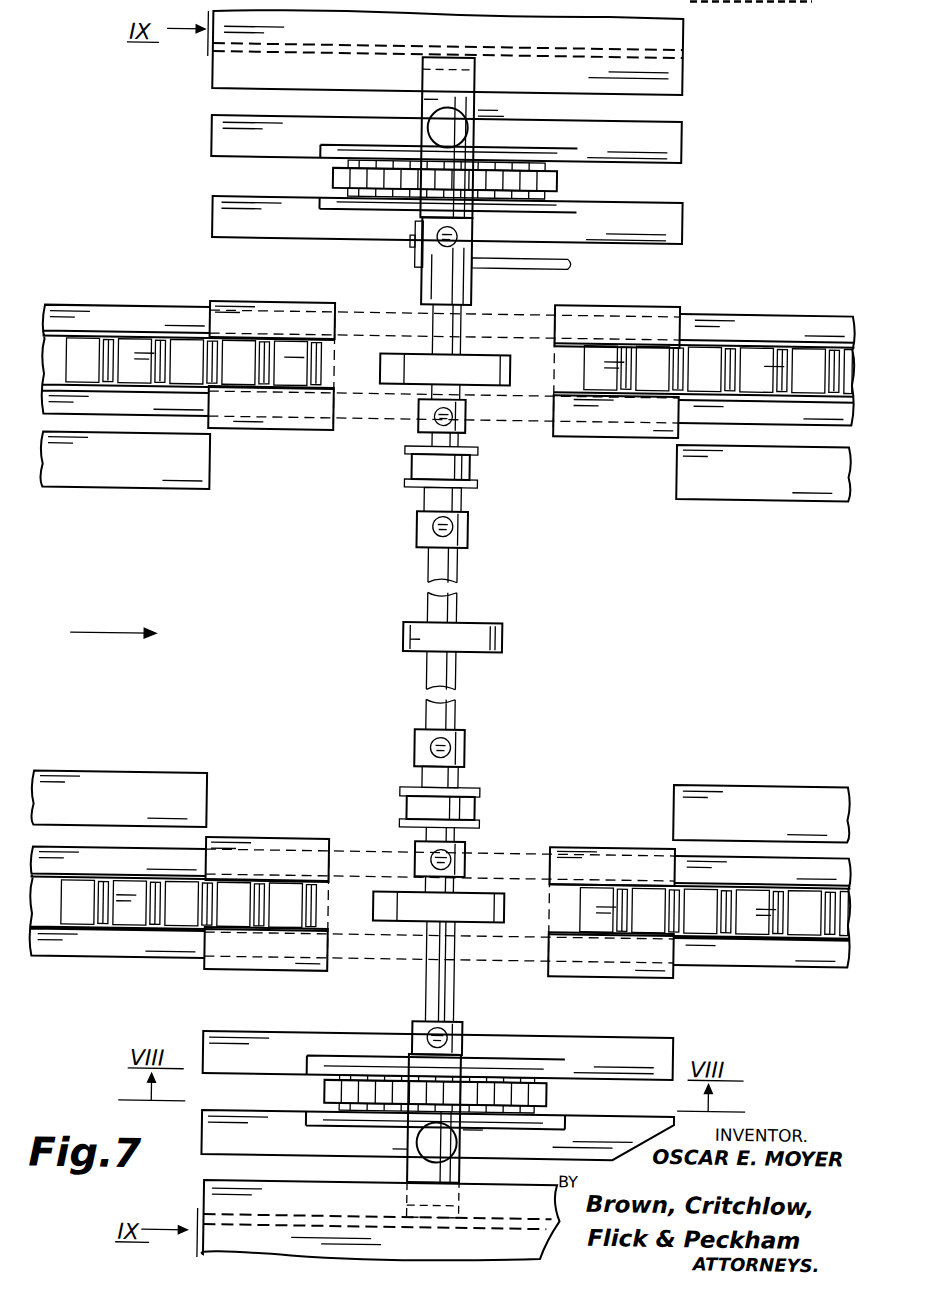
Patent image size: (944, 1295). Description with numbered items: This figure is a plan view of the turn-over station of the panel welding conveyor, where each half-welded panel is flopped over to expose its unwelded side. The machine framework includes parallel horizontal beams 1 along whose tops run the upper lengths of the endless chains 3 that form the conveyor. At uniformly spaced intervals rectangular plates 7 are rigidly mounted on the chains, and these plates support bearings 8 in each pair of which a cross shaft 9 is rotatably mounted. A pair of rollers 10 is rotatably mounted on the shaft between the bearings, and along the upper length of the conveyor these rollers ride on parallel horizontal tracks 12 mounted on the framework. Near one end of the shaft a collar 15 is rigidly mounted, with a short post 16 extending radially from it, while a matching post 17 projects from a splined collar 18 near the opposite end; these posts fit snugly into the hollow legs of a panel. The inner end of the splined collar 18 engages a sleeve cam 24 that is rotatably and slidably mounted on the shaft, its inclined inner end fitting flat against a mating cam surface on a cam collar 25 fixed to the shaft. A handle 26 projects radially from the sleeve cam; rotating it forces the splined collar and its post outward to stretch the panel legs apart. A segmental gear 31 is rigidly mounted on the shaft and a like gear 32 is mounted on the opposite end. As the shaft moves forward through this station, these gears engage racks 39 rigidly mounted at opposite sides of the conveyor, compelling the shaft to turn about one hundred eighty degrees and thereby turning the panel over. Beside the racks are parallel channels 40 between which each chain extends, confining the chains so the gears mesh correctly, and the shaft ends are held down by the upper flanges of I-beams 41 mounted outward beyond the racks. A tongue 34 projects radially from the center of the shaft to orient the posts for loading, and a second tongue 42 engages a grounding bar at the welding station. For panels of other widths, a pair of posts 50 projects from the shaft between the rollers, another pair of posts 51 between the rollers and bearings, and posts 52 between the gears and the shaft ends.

The horizontal beams 1 is at (815, 328).
The endless chains 3 is at (731, 355).
The rectangular plates 7 is at (529, 352).
The bearings 8 is at (493, 376).
The cross shaft 9 is at (458, 570).
The rollers 10 is at (473, 471).
The horizontal tracks 12 is at (703, 490).
The collar 15 is at (468, 1028).
The post 16 is at (423, 1032).
The post 17 is at (437, 243).
The splined collar 18 is at (466, 236).
The sleeve cam 24 is at (456, 270).
The cam collar 25 is at (419, 290).
The handle 26 is at (567, 262).
The segmental gear 31 is at (549, 183).
The segmental gear 32 is at (555, 1092).
The tongue 34 is at (403, 648).
The racks 39 is at (340, 167).
The channels 40 is at (256, 320).
The I-beams 41 is at (214, 76).
The second tongue 42 is at (505, 645).
The posts 50 is at (436, 527).
The posts 51 is at (424, 422).
The posts 52 is at (451, 126).